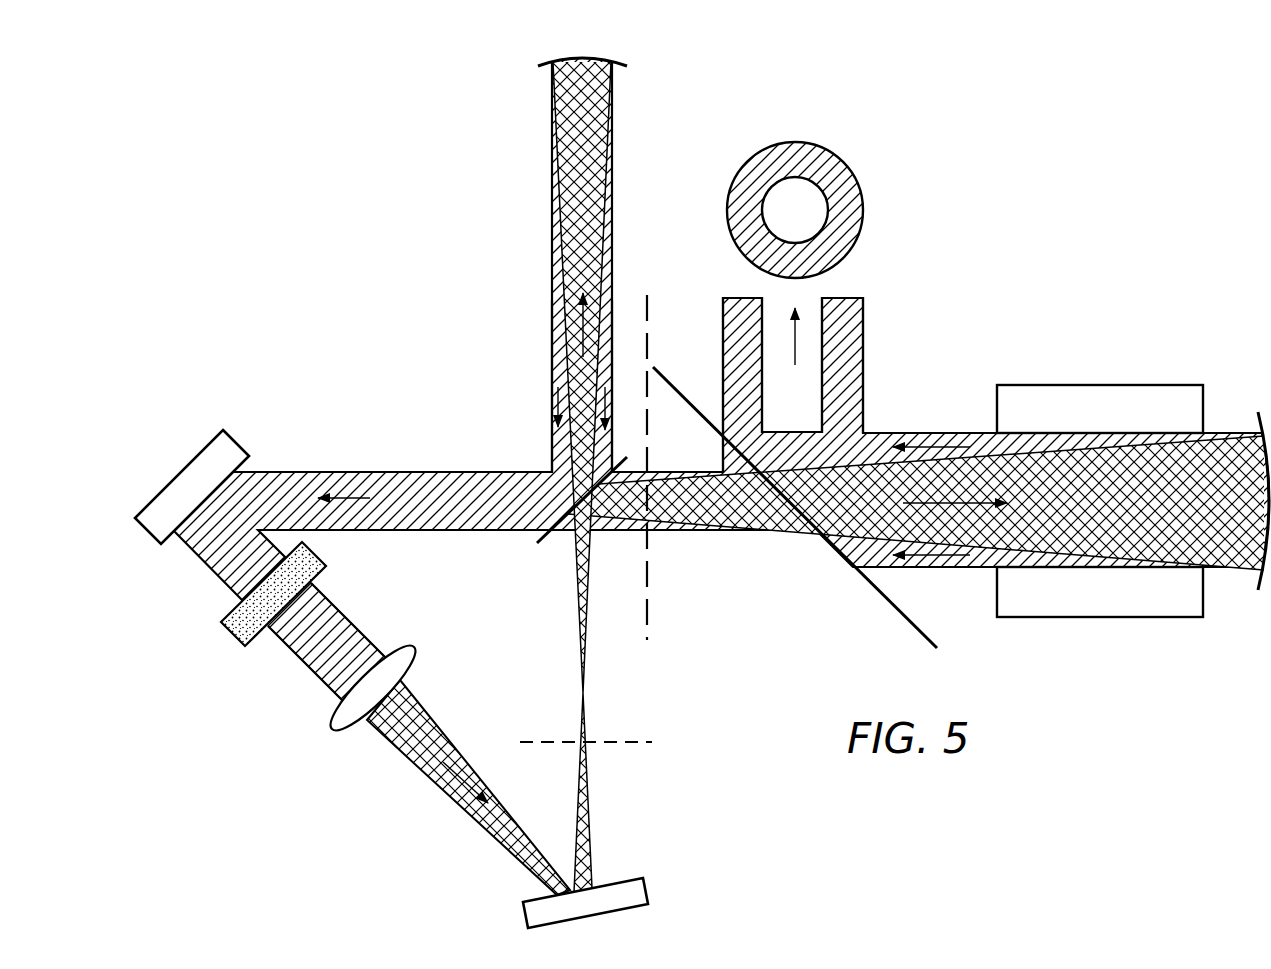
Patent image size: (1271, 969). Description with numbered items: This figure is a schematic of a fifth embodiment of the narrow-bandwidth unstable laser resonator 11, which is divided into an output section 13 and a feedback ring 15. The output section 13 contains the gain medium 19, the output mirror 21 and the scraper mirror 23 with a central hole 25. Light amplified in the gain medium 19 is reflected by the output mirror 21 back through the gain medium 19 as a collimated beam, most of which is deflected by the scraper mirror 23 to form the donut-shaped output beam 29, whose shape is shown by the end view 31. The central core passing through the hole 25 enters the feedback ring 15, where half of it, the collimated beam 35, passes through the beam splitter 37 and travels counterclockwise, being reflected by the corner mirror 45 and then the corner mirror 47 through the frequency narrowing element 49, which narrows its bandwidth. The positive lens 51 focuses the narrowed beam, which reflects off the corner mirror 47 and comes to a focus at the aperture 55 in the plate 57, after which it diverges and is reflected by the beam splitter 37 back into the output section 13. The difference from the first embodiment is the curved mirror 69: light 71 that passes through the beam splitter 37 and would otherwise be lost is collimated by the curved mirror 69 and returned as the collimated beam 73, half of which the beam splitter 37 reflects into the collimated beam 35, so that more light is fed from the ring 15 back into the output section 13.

The unstable laser resonator 11 is at (735, 121).
The output section 13 is at (1001, 315).
The feedback ring 15 is at (398, 272).
The gain medium 19 is at (1085, 388).
The output mirror 21 is at (1260, 582).
The scraper mirror 23 is at (922, 628).
The hole 25 is at (778, 505).
The output beam 29 is at (866, 330).
The end view 31 is at (862, 188).
The collimated beam 35 is at (372, 472).
The beam splitter 37 is at (537, 535).
The corner mirror 45 is at (170, 480).
The corner mirror 47 is at (633, 882).
The frequency narrowing element 49 is at (235, 642).
The positive lens 51 is at (333, 728).
The aperture 55 is at (589, 744).
The plate 57 is at (651, 724).
The curved mirror 69 is at (607, 64).
The light 71 is at (598, 188).
The collimated beam 73 is at (553, 300).